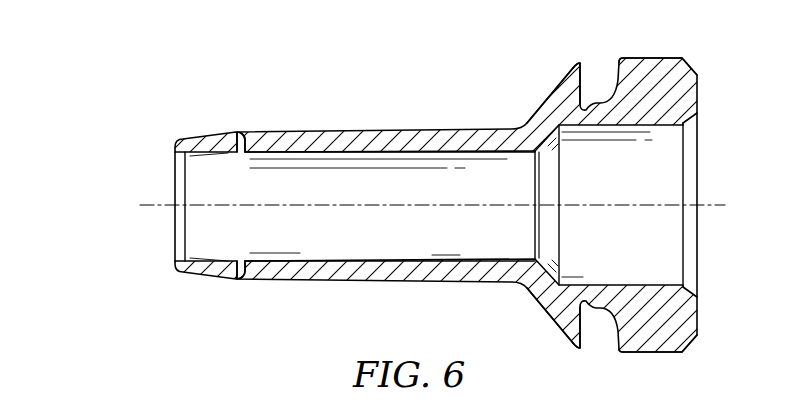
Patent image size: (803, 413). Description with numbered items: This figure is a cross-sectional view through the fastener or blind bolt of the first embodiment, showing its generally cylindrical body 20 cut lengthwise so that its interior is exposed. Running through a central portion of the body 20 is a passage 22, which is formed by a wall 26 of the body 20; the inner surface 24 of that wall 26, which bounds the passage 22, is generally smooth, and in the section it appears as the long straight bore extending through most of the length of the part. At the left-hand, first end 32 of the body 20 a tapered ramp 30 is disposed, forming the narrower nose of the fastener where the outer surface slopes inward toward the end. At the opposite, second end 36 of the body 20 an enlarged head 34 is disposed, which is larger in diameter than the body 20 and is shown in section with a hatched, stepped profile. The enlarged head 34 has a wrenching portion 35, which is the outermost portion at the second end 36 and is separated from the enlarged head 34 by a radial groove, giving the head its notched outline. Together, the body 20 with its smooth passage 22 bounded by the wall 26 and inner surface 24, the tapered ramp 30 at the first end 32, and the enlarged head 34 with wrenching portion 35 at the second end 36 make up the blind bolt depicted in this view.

The body 20 is at (121, 100).
The passage 22 is at (311, 236).
The inner surface 24 is at (389, 148).
The wall 26 is at (406, 264).
The tapered ramp 30 is at (202, 134).
The first end 32 is at (248, 139).
The enlarged head 34 is at (578, 60).
The wrenching portion 35 is at (660, 58).
The second end 36 is at (550, 92).